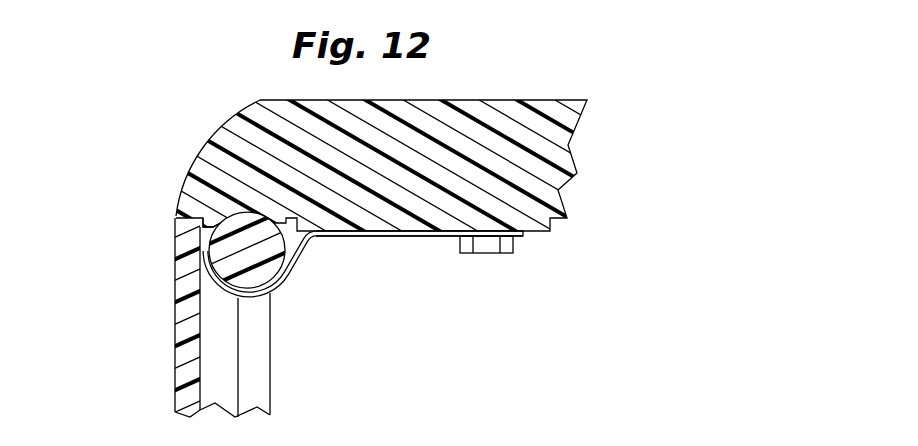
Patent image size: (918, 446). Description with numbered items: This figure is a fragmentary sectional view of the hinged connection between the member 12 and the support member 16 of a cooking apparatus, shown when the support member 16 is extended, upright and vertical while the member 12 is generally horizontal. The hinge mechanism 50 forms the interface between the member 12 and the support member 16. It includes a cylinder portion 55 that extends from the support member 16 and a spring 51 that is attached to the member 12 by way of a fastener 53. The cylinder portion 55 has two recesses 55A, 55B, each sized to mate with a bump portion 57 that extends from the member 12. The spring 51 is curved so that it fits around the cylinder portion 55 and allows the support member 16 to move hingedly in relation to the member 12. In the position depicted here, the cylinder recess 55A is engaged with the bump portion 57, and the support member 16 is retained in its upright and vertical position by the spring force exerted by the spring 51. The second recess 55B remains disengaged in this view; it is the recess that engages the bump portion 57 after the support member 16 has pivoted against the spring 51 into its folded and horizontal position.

The member 12 is at (232, 102).
The second support member 16 is at (175, 348).
The hinge mechanism 50 is at (134, 235).
The spring 51 is at (280, 282).
The fastener 53 is at (493, 253).
The cylinder portion 55 is at (238, 293).
The cylinder recess 55A is at (212, 222).
The cylinder recess 55B is at (295, 255).
The bump portion 57 is at (247, 213).